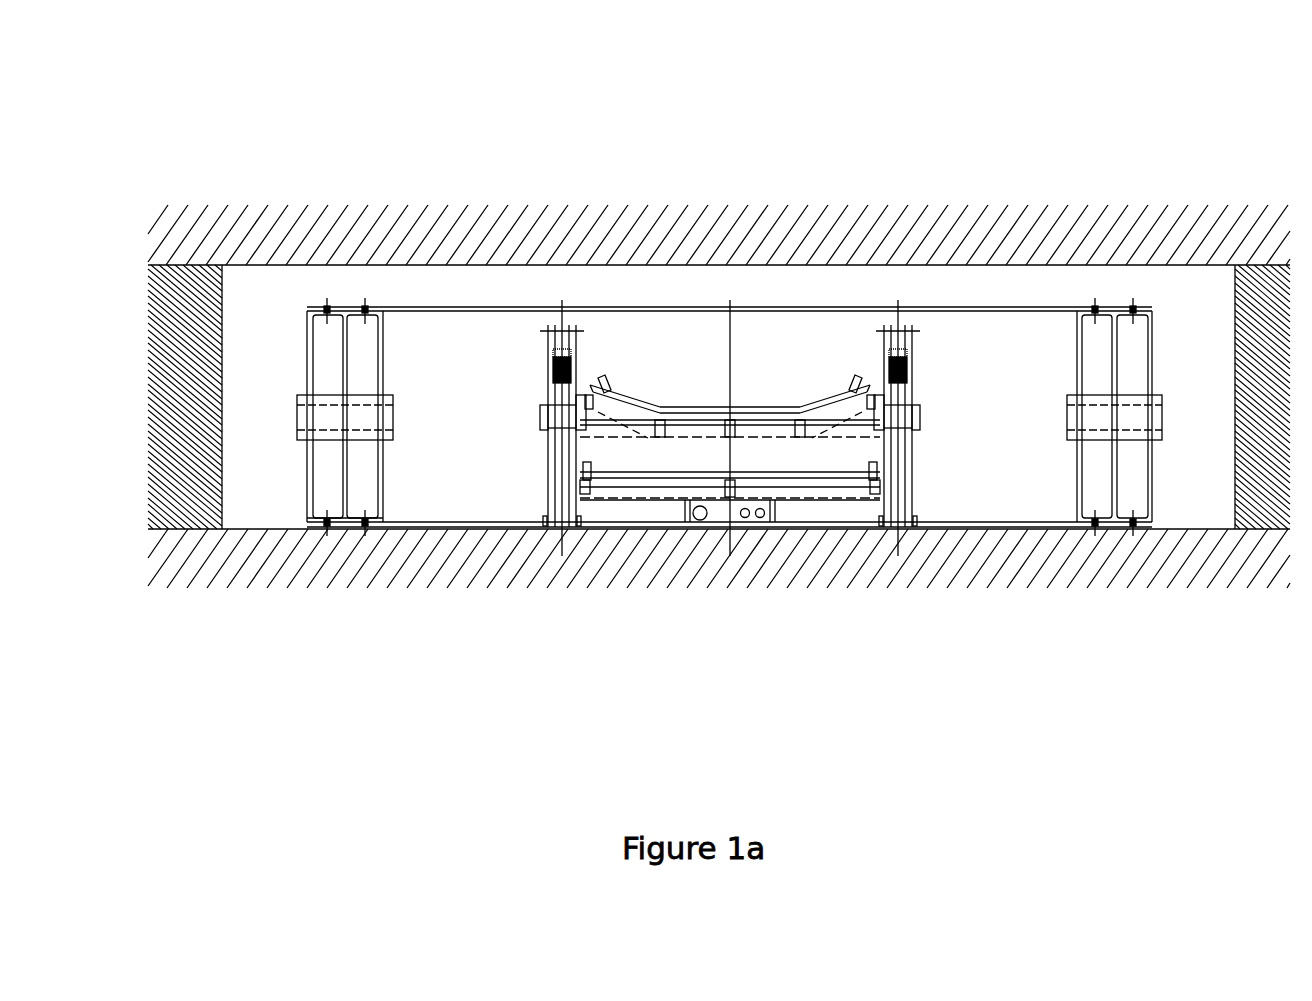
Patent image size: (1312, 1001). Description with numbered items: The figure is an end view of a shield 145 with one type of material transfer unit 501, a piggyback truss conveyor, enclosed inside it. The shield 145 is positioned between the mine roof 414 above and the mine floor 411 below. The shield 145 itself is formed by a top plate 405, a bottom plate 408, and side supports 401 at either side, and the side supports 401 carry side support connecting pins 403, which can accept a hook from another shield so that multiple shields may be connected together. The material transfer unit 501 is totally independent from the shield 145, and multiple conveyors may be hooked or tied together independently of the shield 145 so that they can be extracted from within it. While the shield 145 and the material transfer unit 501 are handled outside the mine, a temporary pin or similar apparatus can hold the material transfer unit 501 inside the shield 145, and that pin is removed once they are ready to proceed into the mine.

The shield 145 is at (670, 181).
The side support connecting pins 403 is at (327, 412).
The mine roof 414 is at (709, 265).
The top plate 405 is at (795, 308).
The side supports 401 is at (302, 480).
The mine floor 411 is at (387, 530).
The bottom plate 408 is at (514, 528).
The material transfer unit 501 is at (913, 463).